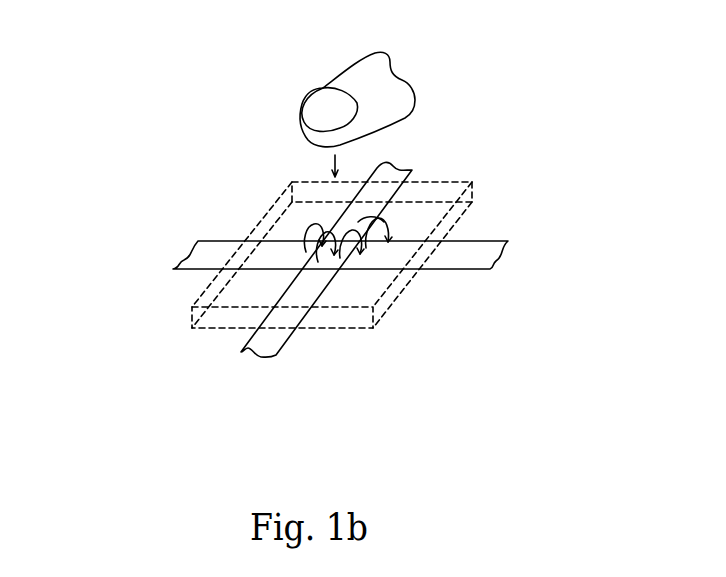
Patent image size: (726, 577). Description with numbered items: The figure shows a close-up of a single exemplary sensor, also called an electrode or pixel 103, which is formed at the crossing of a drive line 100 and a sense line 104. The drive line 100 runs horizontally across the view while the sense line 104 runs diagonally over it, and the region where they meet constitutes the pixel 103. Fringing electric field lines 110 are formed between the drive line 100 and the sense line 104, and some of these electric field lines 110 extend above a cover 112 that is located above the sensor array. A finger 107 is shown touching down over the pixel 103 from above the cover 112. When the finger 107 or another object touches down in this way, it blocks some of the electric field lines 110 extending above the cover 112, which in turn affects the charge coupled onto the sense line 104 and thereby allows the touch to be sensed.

The drive line 100 is at (171, 264).
The pixel 103 is at (393, 350).
The sense line 104 is at (241, 354).
The finger 107 is at (325, 87).
The electric field lines 110 is at (308, 238).
The cover 112 is at (476, 193).